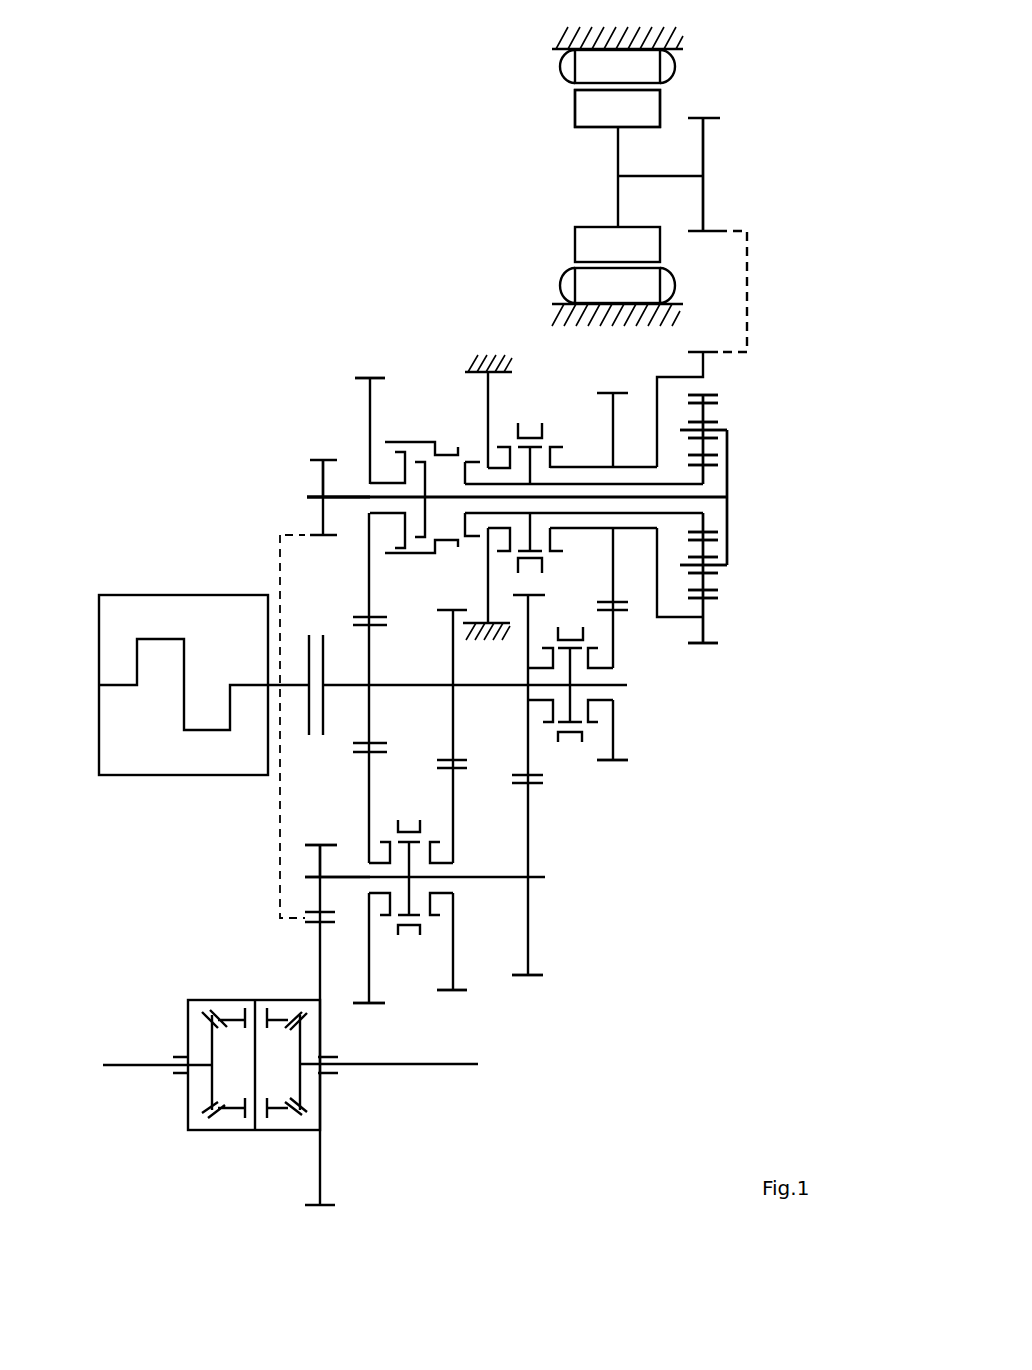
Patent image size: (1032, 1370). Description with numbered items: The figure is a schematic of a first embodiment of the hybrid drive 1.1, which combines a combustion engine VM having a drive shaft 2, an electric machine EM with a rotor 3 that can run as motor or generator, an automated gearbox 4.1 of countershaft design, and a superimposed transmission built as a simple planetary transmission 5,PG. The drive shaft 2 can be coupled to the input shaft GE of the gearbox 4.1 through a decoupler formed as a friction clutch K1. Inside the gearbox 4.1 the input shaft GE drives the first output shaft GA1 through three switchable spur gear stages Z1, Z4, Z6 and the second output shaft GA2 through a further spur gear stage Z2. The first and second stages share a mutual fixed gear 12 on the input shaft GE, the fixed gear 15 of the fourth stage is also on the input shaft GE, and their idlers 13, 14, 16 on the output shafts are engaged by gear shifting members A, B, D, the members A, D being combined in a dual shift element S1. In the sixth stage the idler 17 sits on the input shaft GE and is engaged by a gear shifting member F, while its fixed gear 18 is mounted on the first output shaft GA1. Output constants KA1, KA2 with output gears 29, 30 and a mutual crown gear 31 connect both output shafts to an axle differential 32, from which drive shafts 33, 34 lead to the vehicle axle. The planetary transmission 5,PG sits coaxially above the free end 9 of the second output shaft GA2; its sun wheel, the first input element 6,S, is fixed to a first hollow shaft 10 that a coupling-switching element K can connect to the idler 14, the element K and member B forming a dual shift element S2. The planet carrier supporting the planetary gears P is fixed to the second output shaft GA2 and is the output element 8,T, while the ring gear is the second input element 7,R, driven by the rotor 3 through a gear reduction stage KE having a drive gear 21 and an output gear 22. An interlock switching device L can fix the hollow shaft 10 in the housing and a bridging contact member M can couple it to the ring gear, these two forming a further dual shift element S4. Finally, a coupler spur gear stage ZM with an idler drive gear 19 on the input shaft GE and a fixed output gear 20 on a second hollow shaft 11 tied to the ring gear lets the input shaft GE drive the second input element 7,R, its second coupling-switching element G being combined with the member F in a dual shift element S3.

The hybrid drive 1.1 is at (218, 124).
The electric machine EM is at (545, 97).
The rotor 3 is at (603, 108).
The gear reduction stage KE is at (705, 105).
The drive gear 21 is at (704, 150).
The output gear 22 is at (706, 367).
The superimposed transmission / planetary transmission 5,PG is at (750, 633).
The planetary gears P is at (706, 413).
The free end of the second output shaft 9 is at (712, 497).
The sun wheel / first input element 6,S is at (706, 520).
The planet carrier / output element 8,T is at (730, 565).
The ring gear / second input element 7,R is at (705, 610).
The first hollow shaft 10 is at (648, 480).
The second hollow shaft 11 is at (586, 466).
The output gear 20 is at (611, 428).
The shift element S4 is at (528, 482).
The coupling-switching element K is at (487, 497).
The interlock switching device L is at (499, 555).
The bridging contact member M is at (556, 555).
The output gear 30 is at (320, 478).
The second output constant KA2 is at (323, 440).
The second output shaft GA2 is at (310, 494).
The idler 14 is at (373, 412).
The second spur gear stage Z2 is at (372, 360).
The dual shift element S2 is at (421, 483).
The gear shifting member B is at (420, 545).
The combustion engine VM is at (183, 622).
The drive shaft 2 is at (247, 680).
The friction clutch K1 is at (316, 668).
The input shaft GE is at (347, 680).
The first output constant KA1 is at (323, 825).
The fixed gear 12 is at (370, 700).
The fixed gear 15 is at (453, 703).
The dual shift element S3 is at (570, 670).
The gear shifting member F is at (540, 728).
The second coupling-switching element G is at (600, 728).
The idler 17 is at (530, 755).
The drive gear 19 is at (612, 732).
The coupler spur gear stage ZM is at (613, 778).
The crown gear 31 is at (320, 948).
The output gear 29 is at (320, 860).
The first output shaft GA1 is at (318, 877).
The dual shift element S1 is at (410, 864).
The gear shifting member A is at (380, 921).
The gear shifting member D is at (440, 921).
The idler 13 is at (370, 958).
The first spur gear stage Z1 is at (368, 1022).
The idler 16 is at (455, 948).
The fourth spur gear stage Z4 is at (450, 1010).
The fixed gear 18 is at (530, 920).
The sixth spur gear stage Z6 is at (527, 995).
The axle differential 32 is at (232, 1050).
The drive shaft 33 is at (140, 1068).
The drive shaft 34 is at (403, 1068).
The automated gearbox 4.1 is at (698, 955).